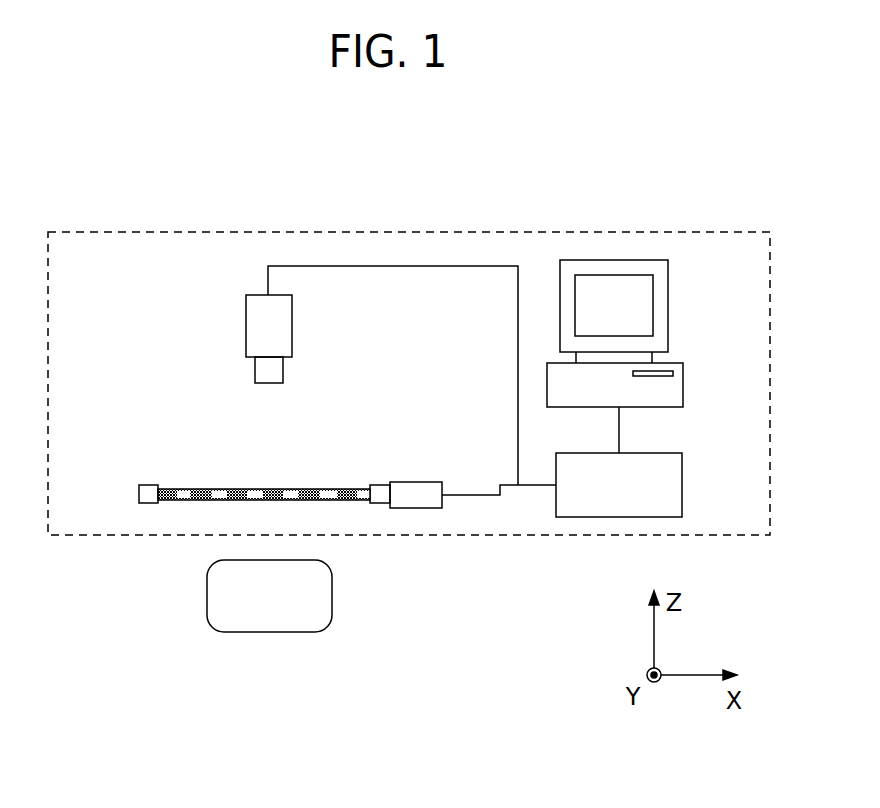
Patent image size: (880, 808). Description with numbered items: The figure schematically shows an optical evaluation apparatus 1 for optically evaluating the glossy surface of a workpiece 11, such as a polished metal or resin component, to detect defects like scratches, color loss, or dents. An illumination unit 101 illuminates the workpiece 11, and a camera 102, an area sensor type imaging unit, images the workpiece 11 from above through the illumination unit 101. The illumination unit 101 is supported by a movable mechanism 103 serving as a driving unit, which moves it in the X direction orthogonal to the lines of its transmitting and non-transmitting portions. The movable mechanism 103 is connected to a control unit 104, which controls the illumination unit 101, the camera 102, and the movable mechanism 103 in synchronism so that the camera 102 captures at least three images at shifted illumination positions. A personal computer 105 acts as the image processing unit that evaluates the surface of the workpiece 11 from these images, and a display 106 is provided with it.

The optical evaluation apparatus 1 is at (481, 220).
The workpiece 11 is at (323, 595).
The illumination unit 101 is at (291, 488).
The camera 102 is at (253, 321).
The movable mechanism 103 is at (412, 482).
The control unit 104 is at (671, 482).
The personal computer 105 is at (667, 391).
The display 106 is at (655, 302).